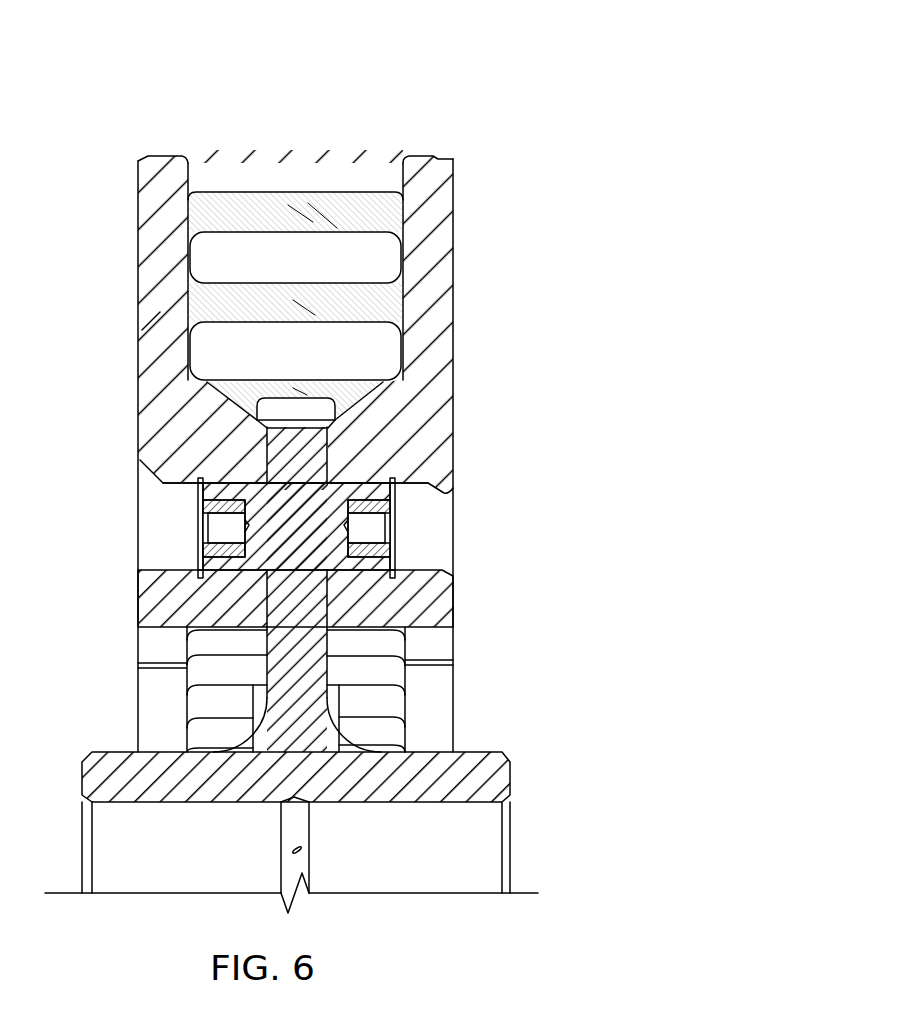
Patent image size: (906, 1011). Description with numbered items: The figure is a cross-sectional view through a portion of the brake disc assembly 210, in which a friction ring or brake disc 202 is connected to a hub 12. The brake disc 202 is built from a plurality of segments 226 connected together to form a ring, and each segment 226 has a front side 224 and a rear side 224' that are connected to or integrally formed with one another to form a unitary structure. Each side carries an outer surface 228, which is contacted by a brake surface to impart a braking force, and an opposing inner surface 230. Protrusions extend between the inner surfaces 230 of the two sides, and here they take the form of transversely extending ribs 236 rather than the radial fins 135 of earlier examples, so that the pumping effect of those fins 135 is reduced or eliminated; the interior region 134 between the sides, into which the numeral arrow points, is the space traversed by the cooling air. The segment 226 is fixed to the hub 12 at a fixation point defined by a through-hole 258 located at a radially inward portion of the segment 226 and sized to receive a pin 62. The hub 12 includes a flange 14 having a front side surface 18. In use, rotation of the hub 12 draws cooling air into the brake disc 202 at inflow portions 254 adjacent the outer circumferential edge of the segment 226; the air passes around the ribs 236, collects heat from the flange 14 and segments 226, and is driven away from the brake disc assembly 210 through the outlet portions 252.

The brake disc assembly 210 is at (498, 45).
The inflow portions 254 is at (402, 112).
The ribs 236 is at (236, 213).
The cavity 134 is at (332, 172).
The brake disc 202 is at (468, 166).
The front side 224 is at (112, 167).
The rear side 224' is at (471, 241).
The outer surface 228 is at (138, 263).
The segments 226 is at (148, 322).
The inner surface 230 is at (190, 342).
The radial fins 135 is at (353, 420).
The through-holes 258 is at (173, 487).
The pins 62 is at (322, 556).
The front side surface 18 is at (248, 642).
The flange 14 is at (338, 695).
The outlet portions 252 is at (115, 625).
The hub 12 is at (497, 775).